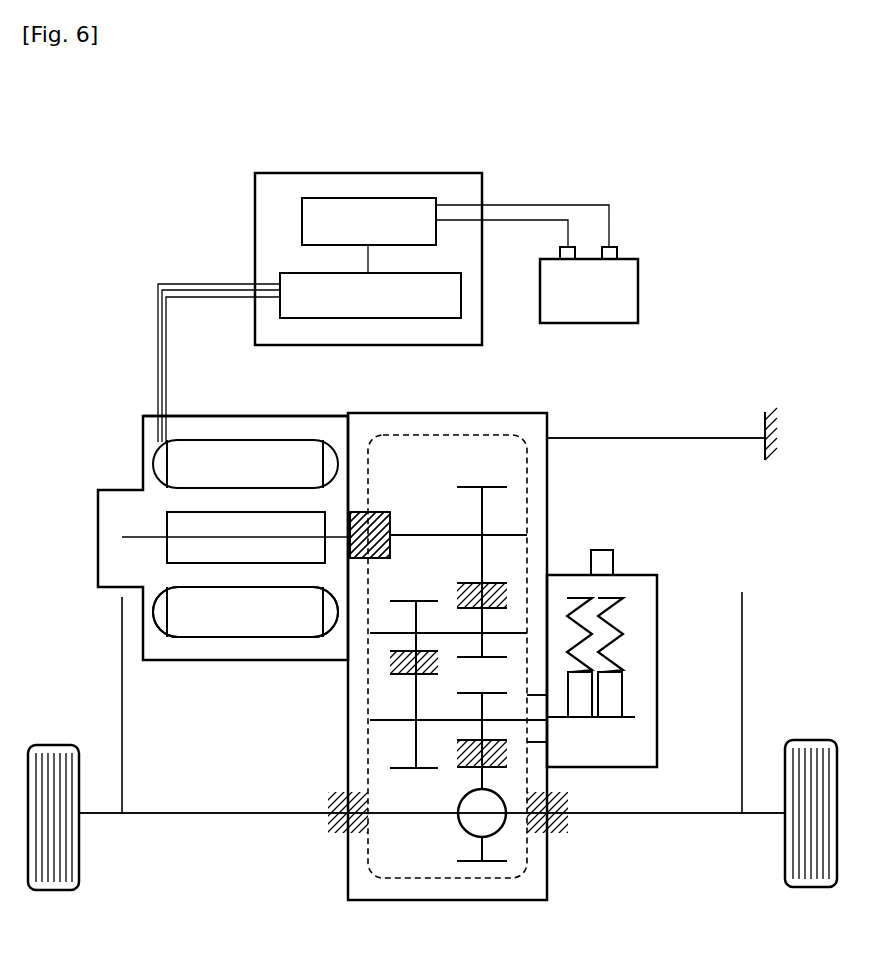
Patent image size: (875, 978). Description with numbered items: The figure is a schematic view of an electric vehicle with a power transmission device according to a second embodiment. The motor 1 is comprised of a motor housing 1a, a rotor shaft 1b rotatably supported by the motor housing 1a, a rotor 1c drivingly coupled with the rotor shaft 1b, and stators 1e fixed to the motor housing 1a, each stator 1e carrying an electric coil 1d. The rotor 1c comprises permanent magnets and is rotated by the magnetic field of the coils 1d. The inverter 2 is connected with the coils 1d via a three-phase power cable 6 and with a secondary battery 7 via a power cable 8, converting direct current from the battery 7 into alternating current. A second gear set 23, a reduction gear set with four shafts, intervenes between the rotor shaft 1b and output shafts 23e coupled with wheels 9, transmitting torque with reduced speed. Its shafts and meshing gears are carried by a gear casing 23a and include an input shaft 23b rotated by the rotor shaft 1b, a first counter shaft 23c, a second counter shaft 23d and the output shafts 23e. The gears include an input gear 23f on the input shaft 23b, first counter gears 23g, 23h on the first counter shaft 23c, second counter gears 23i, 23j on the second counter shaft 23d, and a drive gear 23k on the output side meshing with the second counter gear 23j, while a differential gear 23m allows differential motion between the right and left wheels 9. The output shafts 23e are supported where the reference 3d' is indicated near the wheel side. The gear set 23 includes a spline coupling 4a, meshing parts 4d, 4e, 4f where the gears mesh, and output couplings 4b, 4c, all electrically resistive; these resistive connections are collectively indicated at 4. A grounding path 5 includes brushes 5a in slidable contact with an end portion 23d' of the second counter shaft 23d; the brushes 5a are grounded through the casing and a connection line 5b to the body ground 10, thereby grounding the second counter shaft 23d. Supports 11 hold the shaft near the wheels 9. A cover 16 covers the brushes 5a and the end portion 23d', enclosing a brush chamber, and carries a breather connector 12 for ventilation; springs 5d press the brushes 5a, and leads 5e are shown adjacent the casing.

The motor 1 is at (119, 480).
The motor housing 1a is at (218, 415).
The rotor shaft 1b is at (183, 537).
The rotor 1c is at (218, 565).
The electric coil 1d is at (157, 632).
The stator 1e is at (270, 639).
The inverter 2 is at (268, 168).
The three-phase power cable 6 is at (214, 270).
The secondary battery 7 is at (650, 283).
The power cable 8 is at (539, 197).
The second gear set 23 is at (496, 407).
The gear casing 23a is at (376, 413).
The clutch mechanism 4 is at (406, 483).
The spline coupling 4a is at (387, 512).
The output coupling 4b is at (332, 830).
The output coupling 4c is at (560, 828).
The meshing part 4d is at (503, 590).
The meshing part 4e is at (393, 663).
The meshing part 4f is at (460, 754).
The input shaft 23b is at (438, 535).
The first counter shaft 23c is at (445, 633).
The second counter shaft 23d is at (458, 714).
The end portion 23d' is at (603, 734).
The output shaft 23e is at (393, 815).
The input gear 23f is at (470, 487).
The first counter gear 23g is at (467, 659).
The first counter gear 23h is at (410, 601).
The second counter gear 23i is at (407, 770).
The second counter gear 23j is at (473, 695).
The drive gear 23k is at (460, 769).
The differential gear 23m is at (460, 828).
The axle 3d' is at (432, 841).
The grounding path 5 is at (622, 420).
The brush 5a is at (615, 698).
The connection line 5b is at (705, 438).
The spring 5d is at (605, 642).
The brake disc 5e is at (606, 672).
The wheel 9 is at (62, 745).
The vehicle body 10 is at (763, 428).
The axle support 11 is at (122, 617).
The breather connector 12 is at (613, 560).
The cover 16 is at (657, 592).